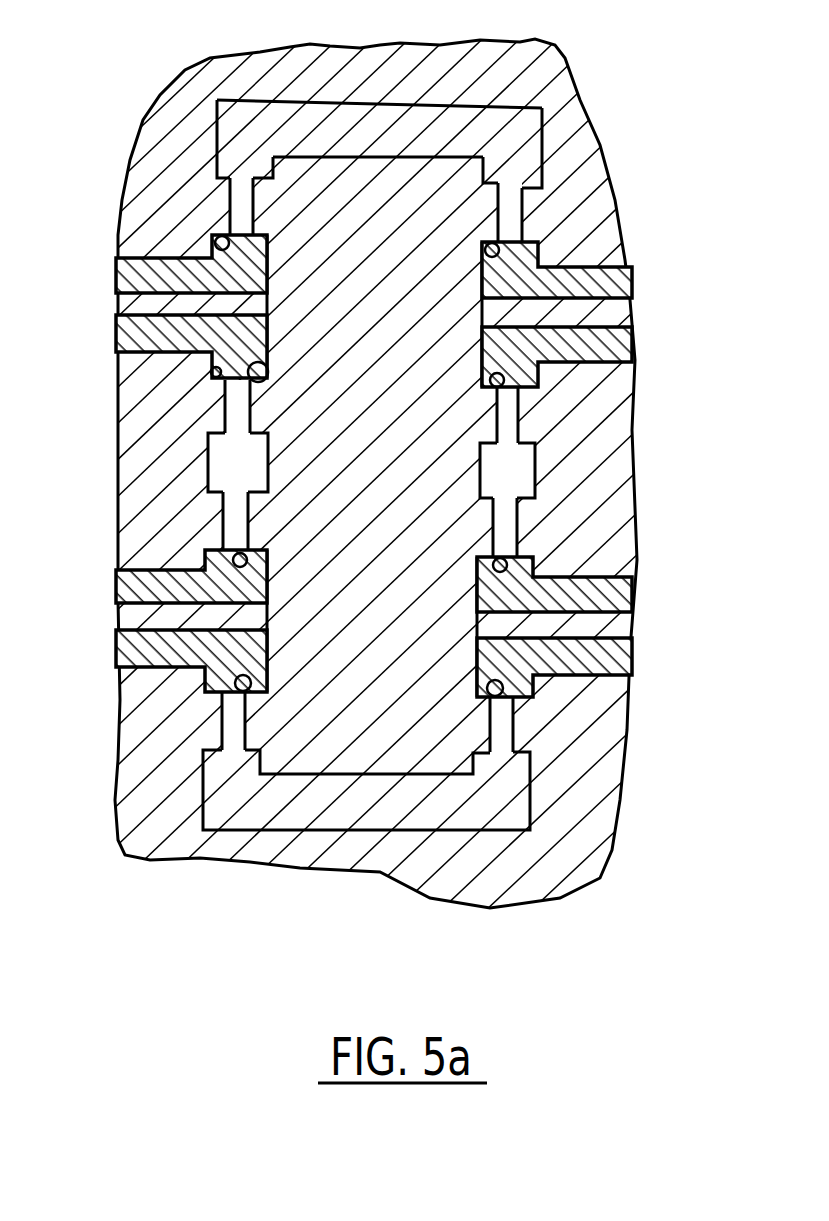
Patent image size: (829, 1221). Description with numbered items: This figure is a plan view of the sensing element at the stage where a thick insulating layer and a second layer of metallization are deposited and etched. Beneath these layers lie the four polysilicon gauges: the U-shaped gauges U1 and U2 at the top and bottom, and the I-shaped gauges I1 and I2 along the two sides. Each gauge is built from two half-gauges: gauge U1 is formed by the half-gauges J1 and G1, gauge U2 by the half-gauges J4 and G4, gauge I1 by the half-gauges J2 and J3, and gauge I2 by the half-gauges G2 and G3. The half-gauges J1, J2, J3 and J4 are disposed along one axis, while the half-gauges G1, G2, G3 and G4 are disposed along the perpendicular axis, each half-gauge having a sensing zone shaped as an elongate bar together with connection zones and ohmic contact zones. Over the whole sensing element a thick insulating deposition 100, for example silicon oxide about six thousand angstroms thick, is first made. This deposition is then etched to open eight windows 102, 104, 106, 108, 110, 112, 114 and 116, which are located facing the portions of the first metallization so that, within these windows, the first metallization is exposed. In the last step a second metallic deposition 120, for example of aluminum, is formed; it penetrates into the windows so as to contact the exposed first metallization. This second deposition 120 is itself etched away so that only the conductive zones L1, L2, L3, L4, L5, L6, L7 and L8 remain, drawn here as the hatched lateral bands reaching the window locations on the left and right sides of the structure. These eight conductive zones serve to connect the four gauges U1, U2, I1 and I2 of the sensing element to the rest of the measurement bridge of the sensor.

The thick insulating deposition 100 is at (567, 118).
The U-shaped gauge U1 is at (375, 95).
The U-shaped gauge U2 is at (372, 835).
The half-gauge J1 is at (243, 205).
The half-gauge J2 is at (252, 423).
The half-gauge J3 is at (250, 533).
The half-gauge J4 is at (247, 733).
The half-gauge G1 is at (498, 208).
The half-gauge G2 is at (488, 425).
The half-gauge G3 is at (488, 533).
The half-gauge G4 is at (490, 734).
The I-shaped gauge I1 is at (206, 457).
The I-shaped gauge I2 is at (538, 463).
The conductive zone L1 is at (160, 330).
The conductive zone L2 is at (120, 572).
The conductive zone L3 is at (120, 650).
The conductive zone L4 is at (629, 667).
The conductive zone L5 is at (629, 580).
The conductive zone L6 is at (629, 345).
The conductive zone L7 is at (629, 284).
The conductive zone L8 is at (120, 270).
The window 102 is at (270, 382).
The window 104 is at (266, 568).
The window 106 is at (257, 675).
The window 108 is at (480, 668).
The window 110 is at (477, 568).
The window 112 is at (488, 388).
The window 114 is at (486, 255).
The window 116 is at (215, 243).
The second metallic deposition 120 is at (118, 356).